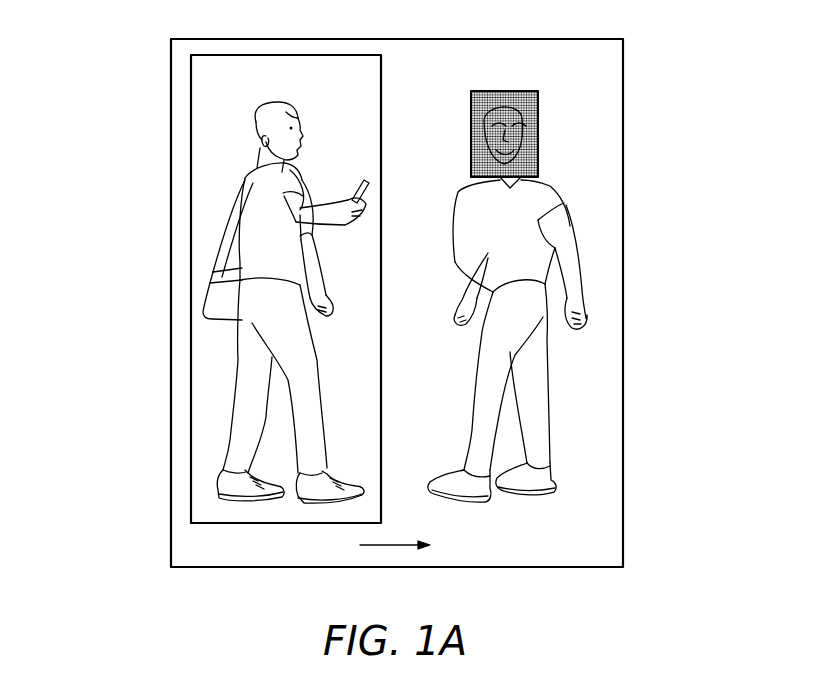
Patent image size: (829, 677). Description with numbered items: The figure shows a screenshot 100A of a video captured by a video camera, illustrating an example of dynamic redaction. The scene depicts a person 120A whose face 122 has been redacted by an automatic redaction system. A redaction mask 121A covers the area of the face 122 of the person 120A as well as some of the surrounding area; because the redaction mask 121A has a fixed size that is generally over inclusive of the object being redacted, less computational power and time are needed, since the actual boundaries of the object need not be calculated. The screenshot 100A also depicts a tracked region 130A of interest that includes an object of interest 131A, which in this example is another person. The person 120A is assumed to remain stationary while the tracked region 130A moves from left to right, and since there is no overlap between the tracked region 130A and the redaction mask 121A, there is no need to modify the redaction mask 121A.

The screenshot 100A is at (94, 37).
The tracked region of interest 130A is at (190, 128).
The object of interest 131A is at (242, 233).
The person 120A is at (543, 343).
The redaction mask 121A is at (512, 90).
The face 122 is at (538, 123).